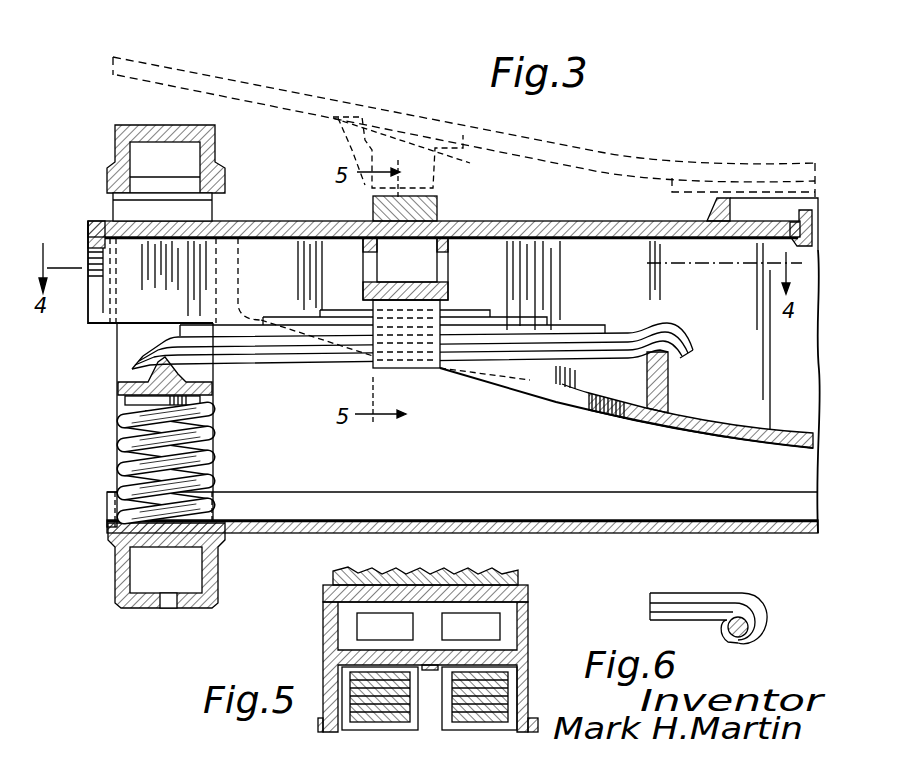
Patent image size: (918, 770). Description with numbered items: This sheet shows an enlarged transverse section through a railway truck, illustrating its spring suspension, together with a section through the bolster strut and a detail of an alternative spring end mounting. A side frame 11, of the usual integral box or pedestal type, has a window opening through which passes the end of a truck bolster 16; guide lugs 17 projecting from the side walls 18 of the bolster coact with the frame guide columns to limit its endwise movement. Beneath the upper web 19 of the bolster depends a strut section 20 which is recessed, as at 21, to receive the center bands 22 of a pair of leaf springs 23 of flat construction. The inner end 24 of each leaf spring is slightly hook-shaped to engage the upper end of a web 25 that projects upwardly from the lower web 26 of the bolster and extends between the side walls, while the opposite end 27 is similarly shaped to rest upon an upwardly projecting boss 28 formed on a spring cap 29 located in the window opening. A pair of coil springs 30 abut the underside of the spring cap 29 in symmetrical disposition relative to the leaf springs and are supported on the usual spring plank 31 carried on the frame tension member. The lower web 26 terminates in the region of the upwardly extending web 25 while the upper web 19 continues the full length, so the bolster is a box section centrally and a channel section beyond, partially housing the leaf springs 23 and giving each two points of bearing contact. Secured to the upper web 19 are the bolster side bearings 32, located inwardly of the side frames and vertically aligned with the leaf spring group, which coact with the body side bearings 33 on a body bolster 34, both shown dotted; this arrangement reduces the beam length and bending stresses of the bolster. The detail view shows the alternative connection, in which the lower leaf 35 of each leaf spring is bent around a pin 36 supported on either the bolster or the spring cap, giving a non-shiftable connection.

In FIG. 3, the side frame 11 is at (108, 124).
In FIG. 3, the truck bolster 16 is at (285, 216).
In FIG. 3, the guide lugs 17 is at (96, 221).
In FIG. 3, the side walls 18 is at (607, 380).
In FIG. 5, the side walls 18 is at (322, 668).
In FIG. 3, the upper web 19 is at (528, 223).
In FIG. 5, the upper web 19 is at (505, 597).
In FIG. 3, the strut section 20 is at (428, 269).
In FIG. 5, the strut section 20 is at (425, 666).
In FIG. 3, the recess 21 is at (403, 299).
In FIG. 5, the recess 21 is at (356, 663).
In FIG. 3, the center bands 22 is at (437, 369).
In FIG. 5, the center bands 22 is at (440, 742).
In FIG. 3, the leaf springs 23 is at (513, 313).
In FIG. 5, the leaf springs 23 is at (355, 693).
In FIG. 3, the inner end 24 is at (672, 331).
In FIG. 3, the web 25 is at (660, 373).
In FIG. 3, the lower web 26 is at (690, 433).
In FIG. 3, the opposite end 27 is at (147, 341).
In FIG. 3, the boss 28 is at (182, 374).
In FIG. 3, the spring cap 29 is at (120, 389).
In FIG. 3, the coil springs 30 is at (210, 441).
In FIG. 3, the spring plank 31 is at (112, 507).
In FIG. 3, the bolster side bearings 32 is at (438, 210).
In FIG. 5, the bolster side bearings 32 is at (519, 572).
In FIG. 3, the body side bearings 33 is at (455, 167).
In FIG. 3, the body bolster 34 is at (586, 137).
In FIG. 6, the lower leaf 35 is at (757, 633).
In FIG. 6, the pin 36 is at (739, 637).